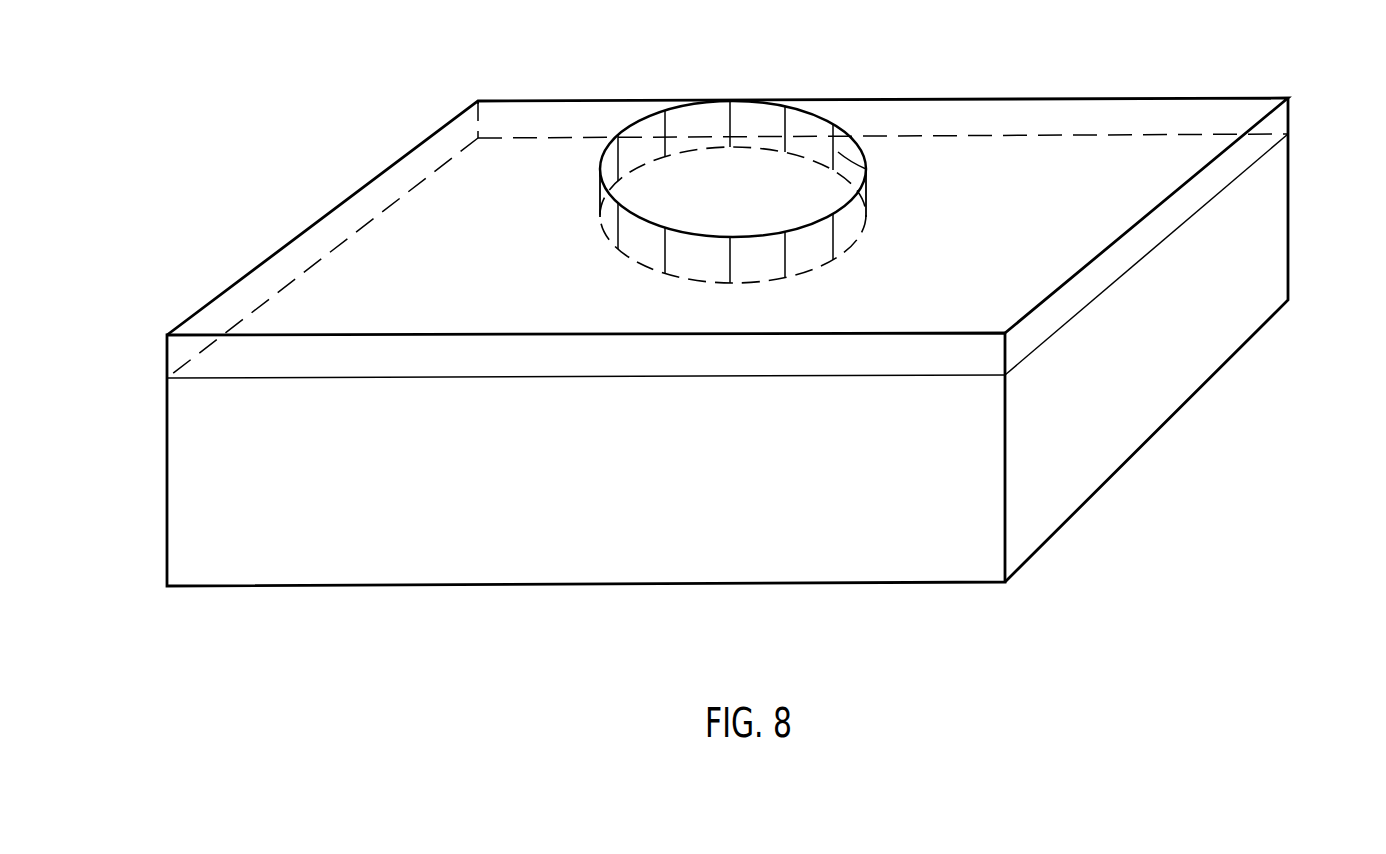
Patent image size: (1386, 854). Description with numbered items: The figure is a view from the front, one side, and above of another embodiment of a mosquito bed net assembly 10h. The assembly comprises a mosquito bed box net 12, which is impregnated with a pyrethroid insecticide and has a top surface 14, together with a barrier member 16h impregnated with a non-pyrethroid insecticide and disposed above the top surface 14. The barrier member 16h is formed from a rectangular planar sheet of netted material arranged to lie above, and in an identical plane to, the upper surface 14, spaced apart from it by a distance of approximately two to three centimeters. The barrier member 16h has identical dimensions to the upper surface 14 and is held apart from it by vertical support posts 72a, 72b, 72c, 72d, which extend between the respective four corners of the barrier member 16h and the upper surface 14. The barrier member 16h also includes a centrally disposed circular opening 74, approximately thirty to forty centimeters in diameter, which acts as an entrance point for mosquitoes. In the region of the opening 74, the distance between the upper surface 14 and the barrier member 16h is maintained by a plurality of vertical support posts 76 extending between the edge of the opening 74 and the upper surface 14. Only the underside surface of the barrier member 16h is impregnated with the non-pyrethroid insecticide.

The mosquito bed net assembly 10h is at (320, 144).
The mosquito bed box net 12 is at (920, 553).
The top surface 14 is at (612, 353).
The barrier member 16h is at (651, 100).
The circular opening 74 is at (781, 172).
The vertical support posts 76 is at (838, 158).
The vertical support post 72a is at (1292, 118).
The vertical support post 72b is at (1007, 350).
The vertical support post 72c is at (165, 352).
The vertical support post 72d is at (478, 122).